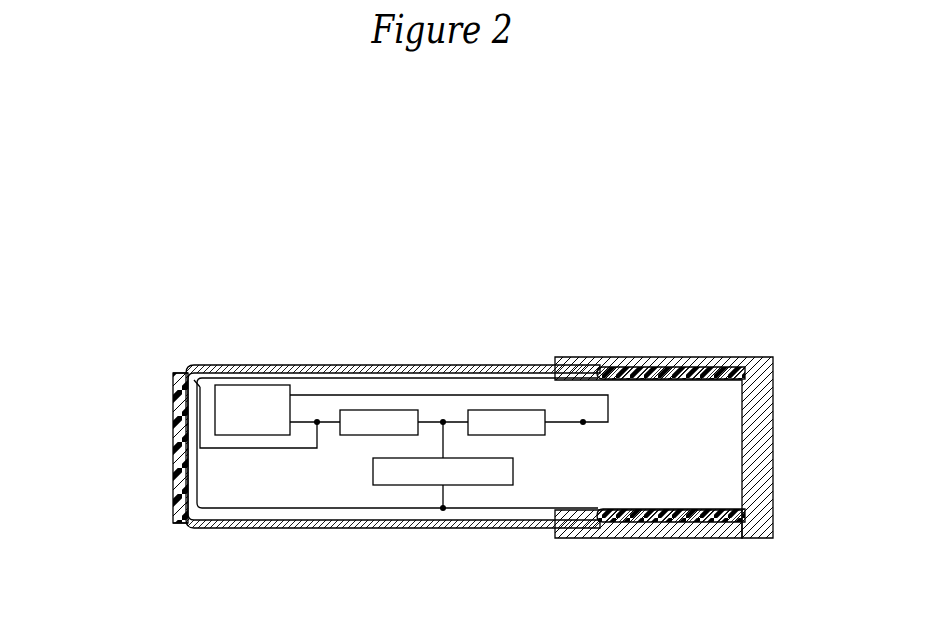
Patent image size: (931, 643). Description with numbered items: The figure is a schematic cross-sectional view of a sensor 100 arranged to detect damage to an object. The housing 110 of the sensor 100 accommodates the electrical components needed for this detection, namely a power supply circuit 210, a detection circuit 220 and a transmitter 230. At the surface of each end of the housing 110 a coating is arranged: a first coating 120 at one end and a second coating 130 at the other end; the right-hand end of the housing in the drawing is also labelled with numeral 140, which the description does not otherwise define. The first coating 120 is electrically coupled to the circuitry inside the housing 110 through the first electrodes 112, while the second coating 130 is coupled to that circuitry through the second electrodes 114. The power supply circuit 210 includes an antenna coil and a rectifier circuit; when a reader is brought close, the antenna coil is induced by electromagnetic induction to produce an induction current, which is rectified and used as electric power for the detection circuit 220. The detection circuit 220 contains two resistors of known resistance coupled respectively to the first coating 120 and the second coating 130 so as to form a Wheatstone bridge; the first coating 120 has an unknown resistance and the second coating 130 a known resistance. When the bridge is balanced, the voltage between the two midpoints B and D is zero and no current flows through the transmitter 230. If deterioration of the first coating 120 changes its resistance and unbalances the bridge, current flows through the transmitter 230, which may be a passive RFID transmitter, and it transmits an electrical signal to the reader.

The sensor 100 is at (505, 336).
The housing 110 is at (415, 365).
The first electrodes 112 is at (176, 378).
The second electrodes 114 is at (612, 384).
The first coating 120 is at (172, 437).
The second coating 130 is at (665, 538).
The right end cap 140 is at (712, 357).
The power supply circuit 210 is at (263, 385).
The detection circuit 220 is at (364, 449).
The transmitter 230 is at (515, 469).